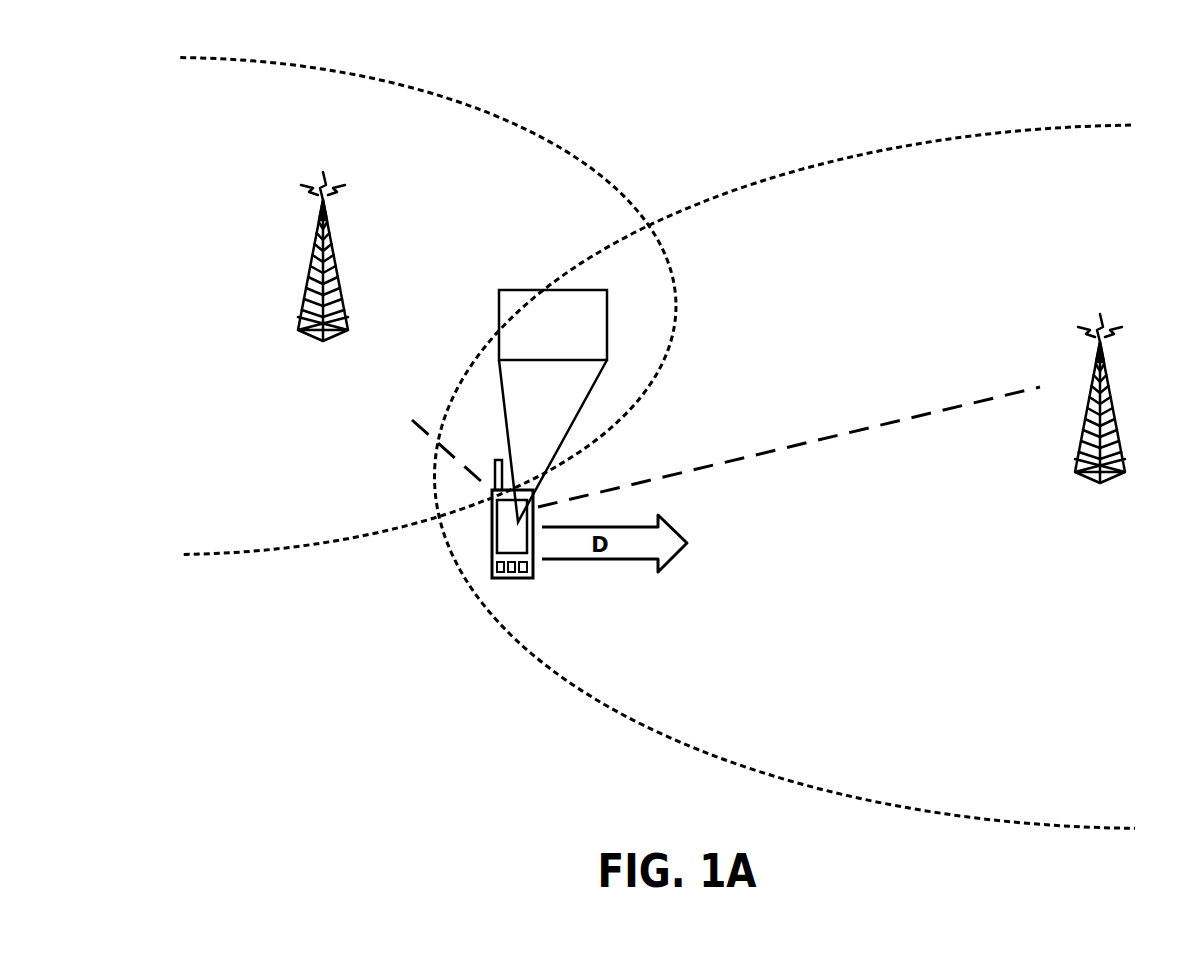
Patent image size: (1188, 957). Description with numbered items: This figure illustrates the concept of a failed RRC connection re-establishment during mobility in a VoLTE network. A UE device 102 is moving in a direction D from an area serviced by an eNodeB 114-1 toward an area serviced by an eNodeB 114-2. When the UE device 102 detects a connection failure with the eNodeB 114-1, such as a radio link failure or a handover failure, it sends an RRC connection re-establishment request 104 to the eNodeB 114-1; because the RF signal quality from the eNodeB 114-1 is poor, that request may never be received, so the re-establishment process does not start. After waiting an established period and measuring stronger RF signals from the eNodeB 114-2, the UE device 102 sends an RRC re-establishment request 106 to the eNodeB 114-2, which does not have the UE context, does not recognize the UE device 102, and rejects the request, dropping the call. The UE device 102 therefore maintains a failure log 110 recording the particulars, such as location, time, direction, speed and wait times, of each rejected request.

The UE device 102 is at (533, 582).
The RRC connection re-establishment request 104 is at (425, 433).
The RRC re-establishment request 106 is at (855, 430).
The failure log 110 is at (511, 289).
The eNodeB 114-1 is at (321, 270).
The eNodeB 114-2 is at (1100, 414).